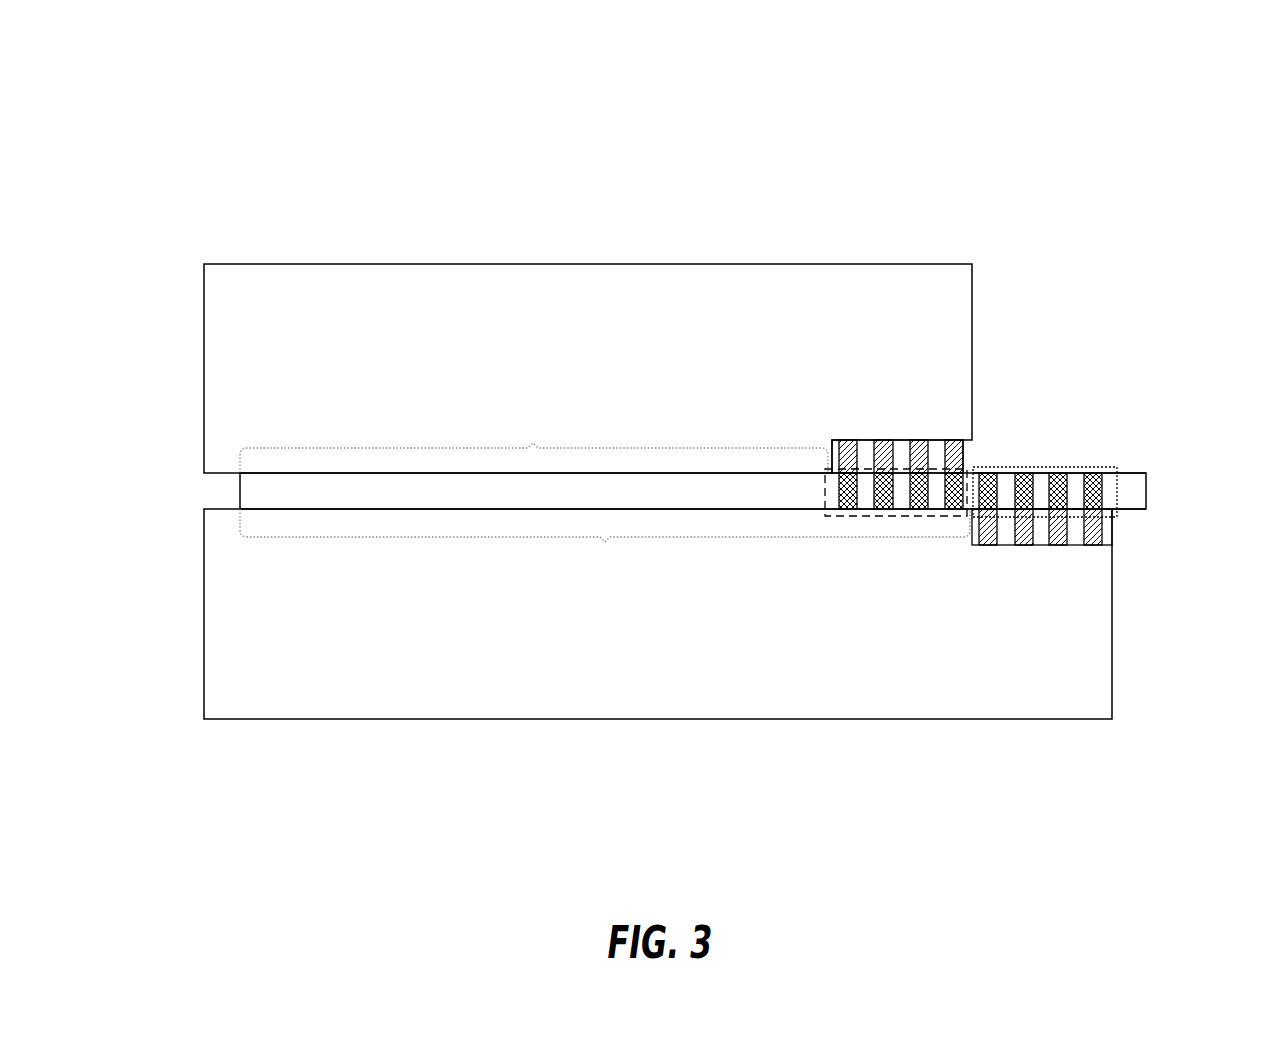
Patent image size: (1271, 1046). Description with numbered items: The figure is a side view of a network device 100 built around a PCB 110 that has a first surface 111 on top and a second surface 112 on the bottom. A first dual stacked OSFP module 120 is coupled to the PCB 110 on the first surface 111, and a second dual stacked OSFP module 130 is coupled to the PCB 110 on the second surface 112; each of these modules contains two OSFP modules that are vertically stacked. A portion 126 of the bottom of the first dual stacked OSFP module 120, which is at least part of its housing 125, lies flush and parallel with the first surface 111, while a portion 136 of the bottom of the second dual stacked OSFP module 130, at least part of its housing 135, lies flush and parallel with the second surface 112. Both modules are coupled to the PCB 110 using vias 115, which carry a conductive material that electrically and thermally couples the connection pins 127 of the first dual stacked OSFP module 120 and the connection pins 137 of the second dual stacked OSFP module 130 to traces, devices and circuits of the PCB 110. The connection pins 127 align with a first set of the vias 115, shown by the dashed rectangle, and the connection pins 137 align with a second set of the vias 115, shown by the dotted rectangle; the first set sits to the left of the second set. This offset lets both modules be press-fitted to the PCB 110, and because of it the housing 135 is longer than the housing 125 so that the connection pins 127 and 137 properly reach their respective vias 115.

The network device 100 is at (166, 116).
The PCB 110 is at (240, 490).
The first surface 111 is at (1136, 471).
The second surface 112 is at (1136, 512).
The vias 115 is at (1027, 473).
The first dual stacked OSFP module 120 is at (343, 230).
The housing 125 is at (900, 297).
The portion 126 is at (534, 443).
The connection pins 127 is at (850, 440).
The second dual stacked OSFP module 130 is at (306, 757).
The housing 135 is at (900, 690).
The portion 136 is at (605, 540).
The connection pins 137 is at (993, 545).